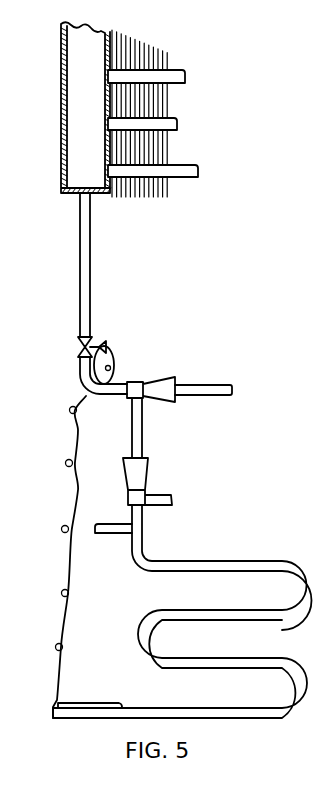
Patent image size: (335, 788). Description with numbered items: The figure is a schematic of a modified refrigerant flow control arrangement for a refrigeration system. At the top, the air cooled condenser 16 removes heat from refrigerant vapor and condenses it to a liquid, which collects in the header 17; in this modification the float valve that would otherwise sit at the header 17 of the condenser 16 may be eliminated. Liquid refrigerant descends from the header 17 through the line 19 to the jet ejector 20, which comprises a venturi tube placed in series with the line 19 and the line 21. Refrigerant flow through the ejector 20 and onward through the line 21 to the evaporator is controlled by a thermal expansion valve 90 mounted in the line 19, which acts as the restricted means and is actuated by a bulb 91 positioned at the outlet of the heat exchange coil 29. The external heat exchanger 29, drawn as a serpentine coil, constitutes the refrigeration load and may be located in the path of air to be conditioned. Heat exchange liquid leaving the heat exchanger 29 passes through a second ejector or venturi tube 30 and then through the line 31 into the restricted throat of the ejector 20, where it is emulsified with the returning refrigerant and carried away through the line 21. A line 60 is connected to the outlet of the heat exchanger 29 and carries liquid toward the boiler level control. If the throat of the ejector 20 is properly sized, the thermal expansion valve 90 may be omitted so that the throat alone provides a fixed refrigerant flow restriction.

The condenser 16 is at (150, 201).
The header 17 is at (78, 108).
The line 19 is at (91, 272).
The jet ejector 20 is at (135, 386).
The line 21 is at (199, 390).
The external heat exchanger 29 is at (210, 566).
The second ejector 30 is at (143, 497).
The line 31 is at (138, 428).
The line 60 is at (105, 523).
The thermal expansion valve 90 is at (107, 344).
The bulb 91 is at (104, 703).